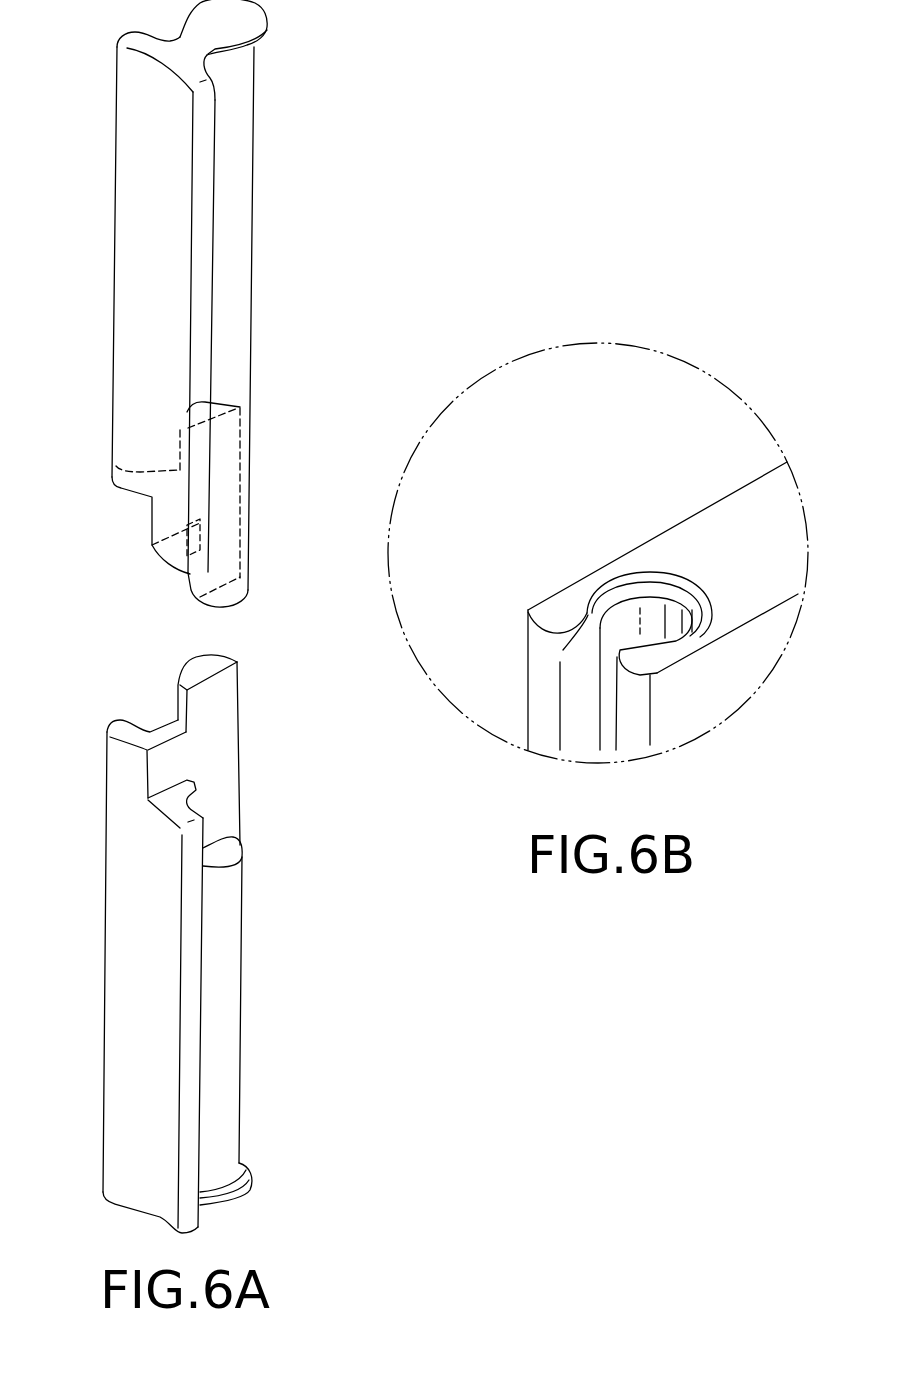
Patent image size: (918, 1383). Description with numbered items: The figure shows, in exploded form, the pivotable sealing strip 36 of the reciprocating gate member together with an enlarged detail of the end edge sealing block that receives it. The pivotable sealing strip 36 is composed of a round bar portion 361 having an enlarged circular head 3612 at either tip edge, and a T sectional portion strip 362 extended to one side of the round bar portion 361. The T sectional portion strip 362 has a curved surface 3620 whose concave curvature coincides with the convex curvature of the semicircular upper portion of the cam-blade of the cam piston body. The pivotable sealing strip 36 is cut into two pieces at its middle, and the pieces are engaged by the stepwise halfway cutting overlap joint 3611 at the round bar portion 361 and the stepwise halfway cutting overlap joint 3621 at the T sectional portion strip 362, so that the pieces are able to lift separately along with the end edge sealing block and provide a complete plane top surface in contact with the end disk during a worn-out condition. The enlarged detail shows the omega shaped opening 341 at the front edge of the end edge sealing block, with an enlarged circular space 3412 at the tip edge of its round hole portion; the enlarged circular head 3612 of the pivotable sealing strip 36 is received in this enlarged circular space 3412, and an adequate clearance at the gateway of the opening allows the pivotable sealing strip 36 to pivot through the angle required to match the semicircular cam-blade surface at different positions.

In FIG. 6A, the pivotable sealing strip 36 is at (285, 326).
In FIG. 6A, the round bar portion 361 is at (245, 160).
In FIG. 6A, the T sectional portion strip 362 is at (110, 128).
In FIG. 6A, the enlarged circular head 3612 is at (247, 15).
In FIG. 6A, the curved surface 3620 is at (132, 247).
In FIG. 6A, the stepwise halfway cutting overlap joint 3621 is at (55, 745).
In FIG. 6A, the stepwise halfway cutting overlap joint 3611 is at (230, 838).
In FIG. 6B, the omega shaped opening 341 is at (651, 605).
In FIG. 6B, the enlarged circular space 3412 is at (606, 590).